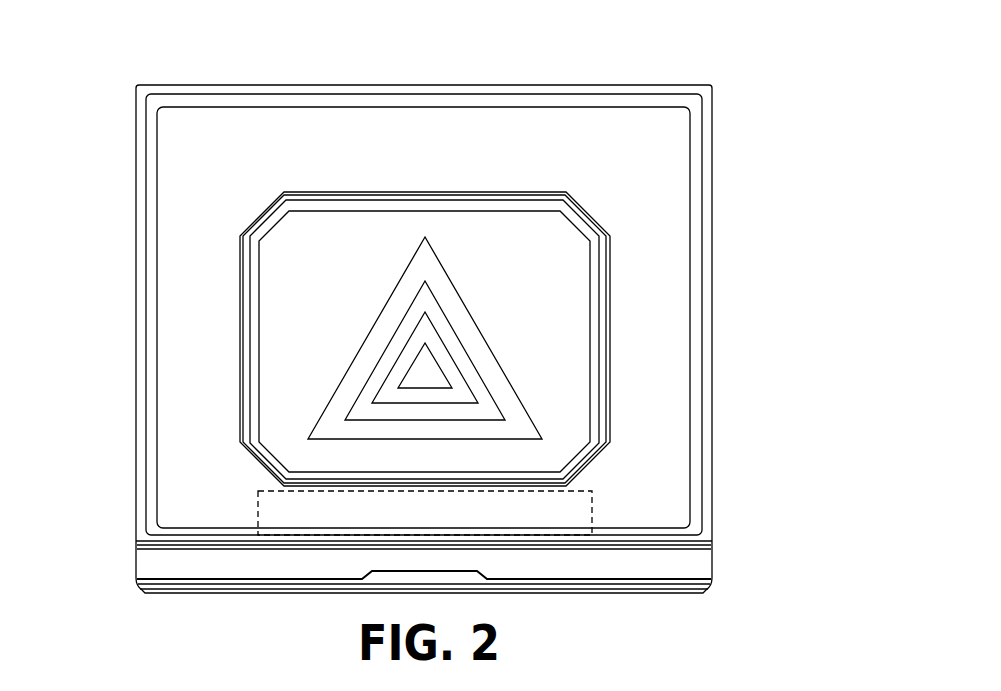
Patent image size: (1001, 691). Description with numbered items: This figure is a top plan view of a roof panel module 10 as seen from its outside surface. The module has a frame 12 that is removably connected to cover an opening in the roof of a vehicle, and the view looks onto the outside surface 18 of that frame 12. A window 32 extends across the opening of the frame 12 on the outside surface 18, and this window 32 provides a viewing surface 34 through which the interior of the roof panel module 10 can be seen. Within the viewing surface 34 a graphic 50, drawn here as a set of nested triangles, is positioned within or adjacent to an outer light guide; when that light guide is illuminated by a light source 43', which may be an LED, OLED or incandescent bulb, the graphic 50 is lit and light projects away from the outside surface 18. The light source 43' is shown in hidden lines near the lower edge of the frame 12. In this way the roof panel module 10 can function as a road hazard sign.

The roof panel module 10 is at (728, 68).
The frame 12 is at (661, 325).
The outside surface 18 is at (400, 143).
The window 32 is at (597, 277).
The viewing surface 34 is at (282, 285).
The light source 43' is at (425, 582).
The graphic 50 is at (530, 392).